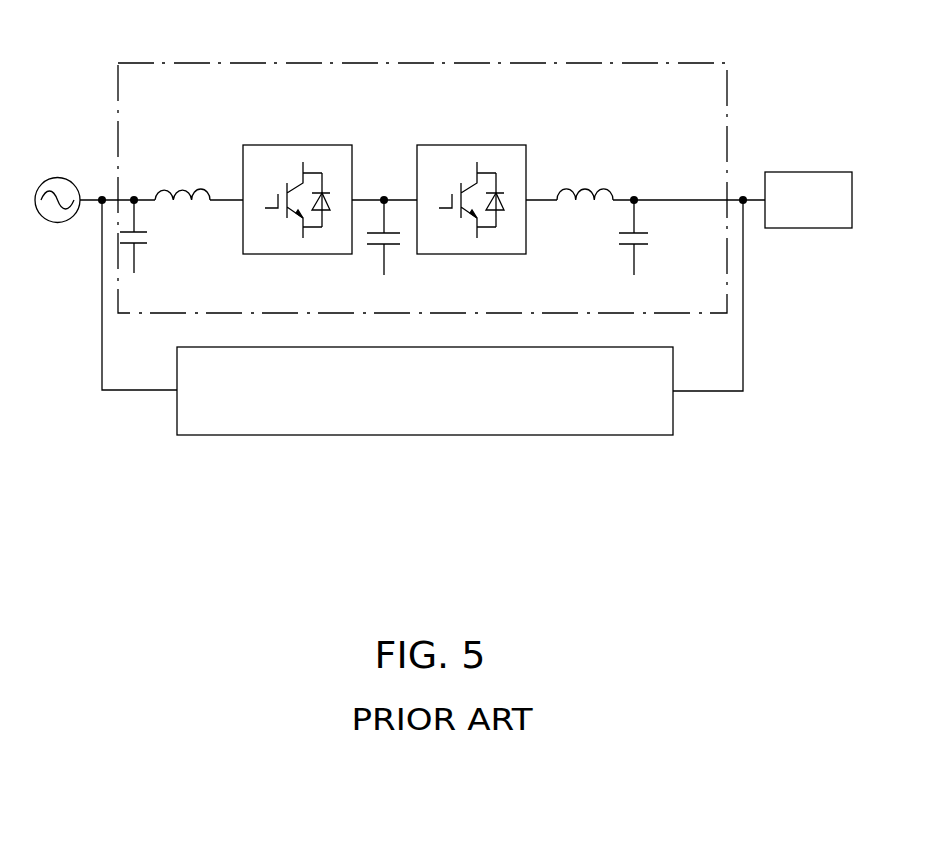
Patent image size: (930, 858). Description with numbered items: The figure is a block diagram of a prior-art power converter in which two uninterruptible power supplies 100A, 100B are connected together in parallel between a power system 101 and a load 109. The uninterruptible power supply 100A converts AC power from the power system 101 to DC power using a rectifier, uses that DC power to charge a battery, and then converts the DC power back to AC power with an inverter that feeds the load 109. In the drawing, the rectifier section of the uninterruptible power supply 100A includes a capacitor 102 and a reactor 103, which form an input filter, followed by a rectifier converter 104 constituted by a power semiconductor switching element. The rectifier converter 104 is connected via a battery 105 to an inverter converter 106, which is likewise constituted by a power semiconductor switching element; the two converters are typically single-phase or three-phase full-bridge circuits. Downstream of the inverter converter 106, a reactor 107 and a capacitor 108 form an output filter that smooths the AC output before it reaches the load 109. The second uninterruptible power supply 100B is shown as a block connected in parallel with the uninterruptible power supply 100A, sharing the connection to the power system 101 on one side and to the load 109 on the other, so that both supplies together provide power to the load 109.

The uninterruptible power supply 100A is at (520, 63).
The uninterruptible power supply 100B is at (408, 428).
The power system 101 is at (58, 182).
The capacitor 102 is at (153, 240).
The reactor 103 is at (184, 177).
The rectifier converter 104 is at (285, 160).
The battery 105 is at (377, 252).
The inverter converter 106 is at (465, 157).
The reactor 107 is at (585, 182).
The capacitor 108 is at (657, 240).
The load 109 is at (805, 183).